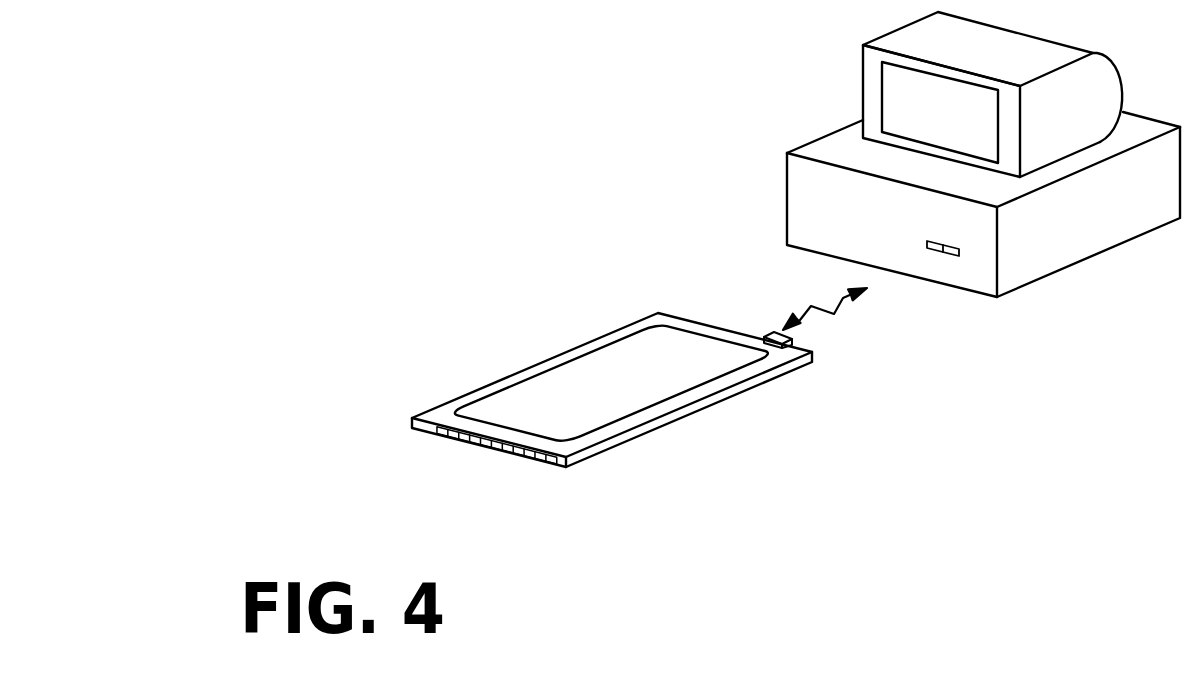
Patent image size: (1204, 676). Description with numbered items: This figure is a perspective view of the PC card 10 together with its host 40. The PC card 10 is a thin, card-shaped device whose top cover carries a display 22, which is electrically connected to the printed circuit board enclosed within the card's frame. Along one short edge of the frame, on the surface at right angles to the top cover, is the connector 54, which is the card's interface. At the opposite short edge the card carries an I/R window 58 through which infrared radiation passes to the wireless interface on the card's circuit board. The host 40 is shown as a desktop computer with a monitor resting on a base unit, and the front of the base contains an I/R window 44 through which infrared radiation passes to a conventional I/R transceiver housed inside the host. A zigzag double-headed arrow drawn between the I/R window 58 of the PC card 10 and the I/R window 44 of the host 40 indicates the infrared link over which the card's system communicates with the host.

The PC card 10 is at (698, 417).
The display 22 is at (583, 372).
The host 40 is at (1117, 257).
The I/R window 44 is at (960, 255).
The connector 54 is at (557, 463).
The I/R window 58 is at (763, 340).